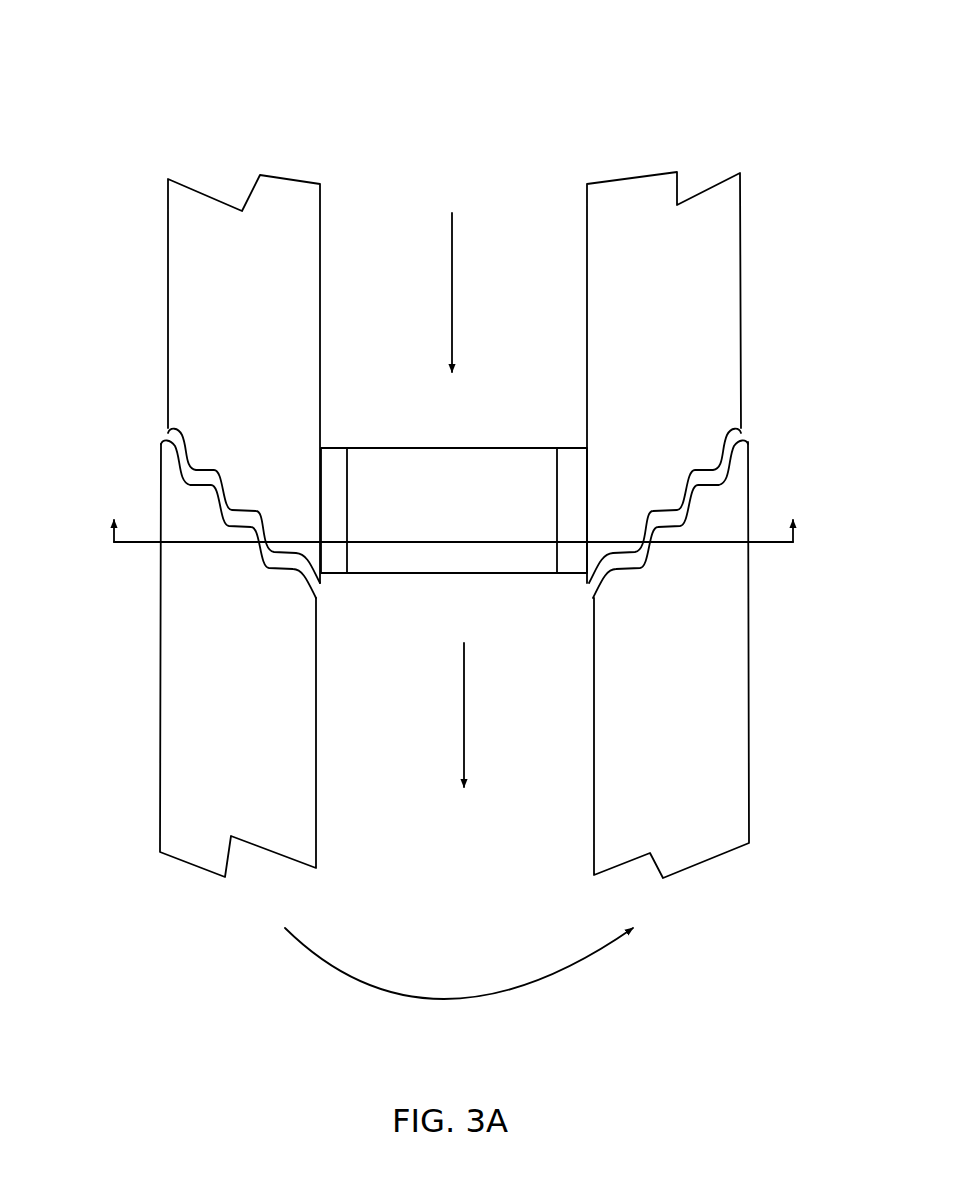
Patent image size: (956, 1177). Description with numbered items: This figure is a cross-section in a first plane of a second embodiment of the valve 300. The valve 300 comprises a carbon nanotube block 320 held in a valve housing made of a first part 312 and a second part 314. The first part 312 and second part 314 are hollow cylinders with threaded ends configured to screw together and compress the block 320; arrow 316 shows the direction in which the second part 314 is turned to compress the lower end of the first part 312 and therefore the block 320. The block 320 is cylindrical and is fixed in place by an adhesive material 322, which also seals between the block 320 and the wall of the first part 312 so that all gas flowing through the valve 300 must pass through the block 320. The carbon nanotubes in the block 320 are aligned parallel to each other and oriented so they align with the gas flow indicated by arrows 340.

The valve 300 is at (241, 93).
The first part 312 is at (192, 340).
The second part 314 is at (179, 771).
The arrow 316 is at (360, 983).
The carbon nanotube block 320 is at (455, 470).
The adhesive material 322 is at (573, 558).
The arrows 340 is at (453, 300).